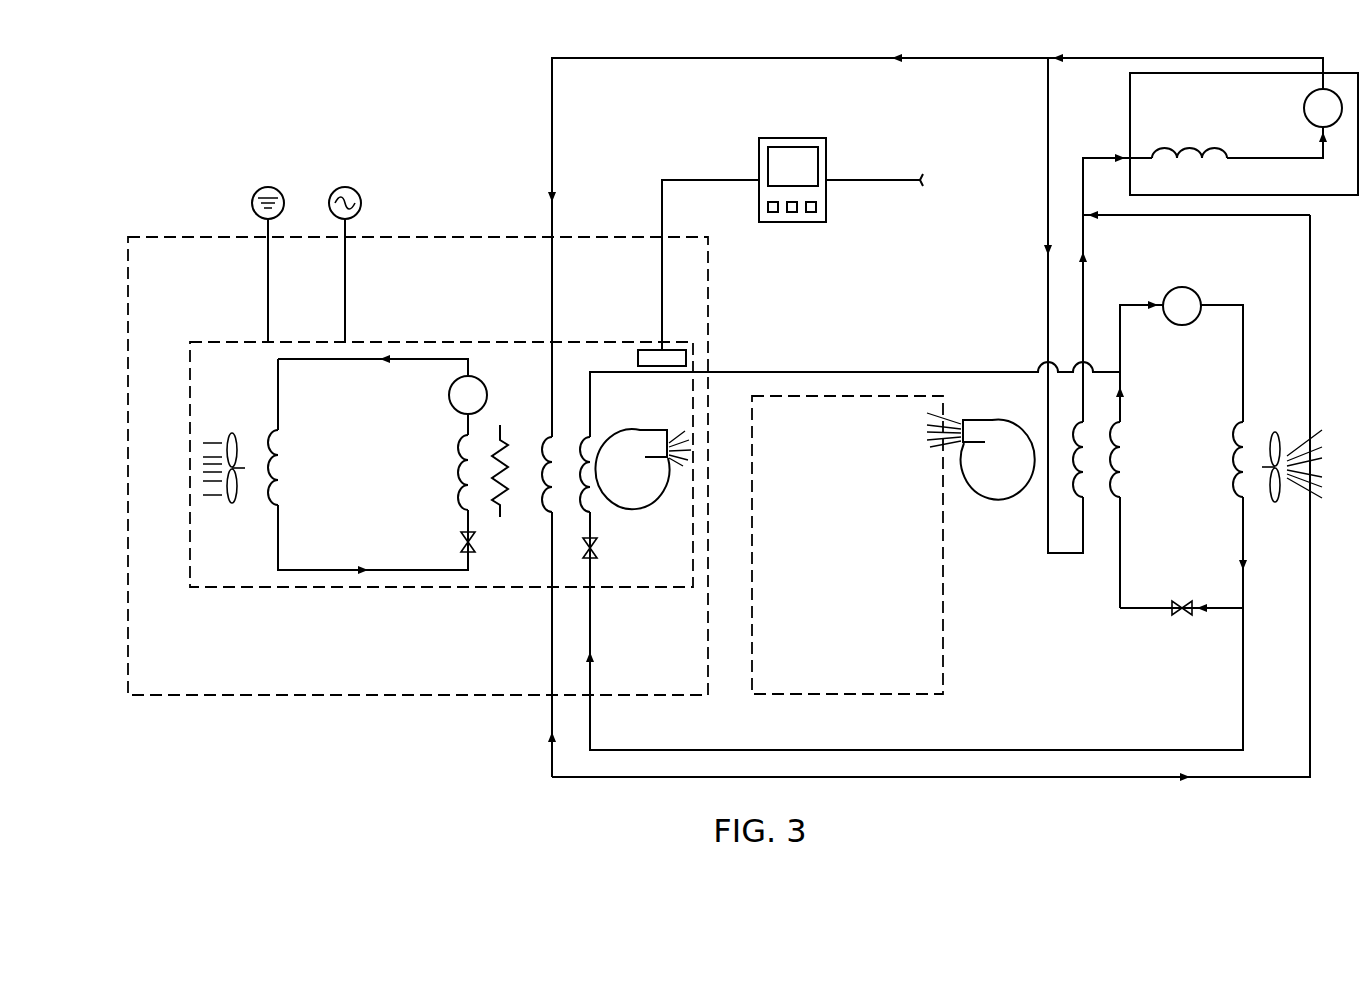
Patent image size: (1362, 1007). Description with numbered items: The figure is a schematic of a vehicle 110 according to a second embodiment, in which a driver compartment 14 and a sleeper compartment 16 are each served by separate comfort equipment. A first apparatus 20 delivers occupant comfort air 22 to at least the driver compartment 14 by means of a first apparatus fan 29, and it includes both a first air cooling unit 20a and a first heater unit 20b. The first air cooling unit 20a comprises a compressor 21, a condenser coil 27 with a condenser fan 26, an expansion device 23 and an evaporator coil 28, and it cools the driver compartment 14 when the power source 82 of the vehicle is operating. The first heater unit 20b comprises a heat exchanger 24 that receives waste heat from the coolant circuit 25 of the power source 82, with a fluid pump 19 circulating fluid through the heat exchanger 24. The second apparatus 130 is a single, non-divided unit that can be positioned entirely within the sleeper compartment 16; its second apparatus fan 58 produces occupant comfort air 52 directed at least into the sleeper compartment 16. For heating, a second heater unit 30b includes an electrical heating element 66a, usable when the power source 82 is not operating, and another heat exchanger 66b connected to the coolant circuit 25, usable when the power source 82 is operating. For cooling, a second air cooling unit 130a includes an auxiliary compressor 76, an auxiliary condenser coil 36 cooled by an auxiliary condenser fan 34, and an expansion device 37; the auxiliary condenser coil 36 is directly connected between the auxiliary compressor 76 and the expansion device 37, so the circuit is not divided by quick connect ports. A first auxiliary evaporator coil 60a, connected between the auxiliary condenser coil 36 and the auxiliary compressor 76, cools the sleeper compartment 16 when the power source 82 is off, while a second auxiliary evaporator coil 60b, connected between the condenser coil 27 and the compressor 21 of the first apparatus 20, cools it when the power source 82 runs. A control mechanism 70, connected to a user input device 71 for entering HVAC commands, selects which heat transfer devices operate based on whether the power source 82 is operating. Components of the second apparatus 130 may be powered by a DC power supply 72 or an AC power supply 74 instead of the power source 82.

The driver compartment 14 is at (806, 694).
The sleeper compartment 16 is at (633, 694).
The fluid pump 19 is at (1304, 108).
The first apparatus 20 is at (1057, 652).
The first air cooling unit 20a is at (1107, 615).
The first heater unit 20b is at (1062, 558).
The compressor 21 is at (1185, 287).
The occupant comfort air 22 is at (935, 447).
The expansion device 23 is at (1178, 616).
The heat exchanger 24 is at (1087, 497).
The coolant circuit 25 is at (1190, 148).
The condenser fan 26 is at (1278, 432).
The condenser coil 27 is at (1235, 478).
The evaporator coil 28 is at (1128, 445).
The first apparatus fan 29 is at (990, 500).
The second heater unit 30b is at (530, 557).
The auxiliary condenser fan 34 is at (232, 503).
The auxiliary condenser coil 36 is at (285, 464).
The expansion device 37 is at (460, 546).
The occupant comfort air 52 is at (680, 430).
The second apparatus fan 58 is at (648, 512).
The first auxiliary evaporator coil 60a is at (460, 462).
The second auxiliary evaporator coil 60b is at (594, 437).
The electrical heating element 66a is at (502, 430).
The heat exchanger 66b is at (503, 517).
The control mechanism 70 is at (655, 350).
The user input device 71 is at (858, 151).
The DC power supply 72 is at (252, 203).
The AC power supply 74 is at (361, 203).
The auxiliary compressor 76 is at (449, 395).
The power source 82 is at (1345, 195).
The vehicle 110 is at (327, 782).
The second apparatus 130 is at (247, 673).
The second air cooling unit 130a is at (428, 595).